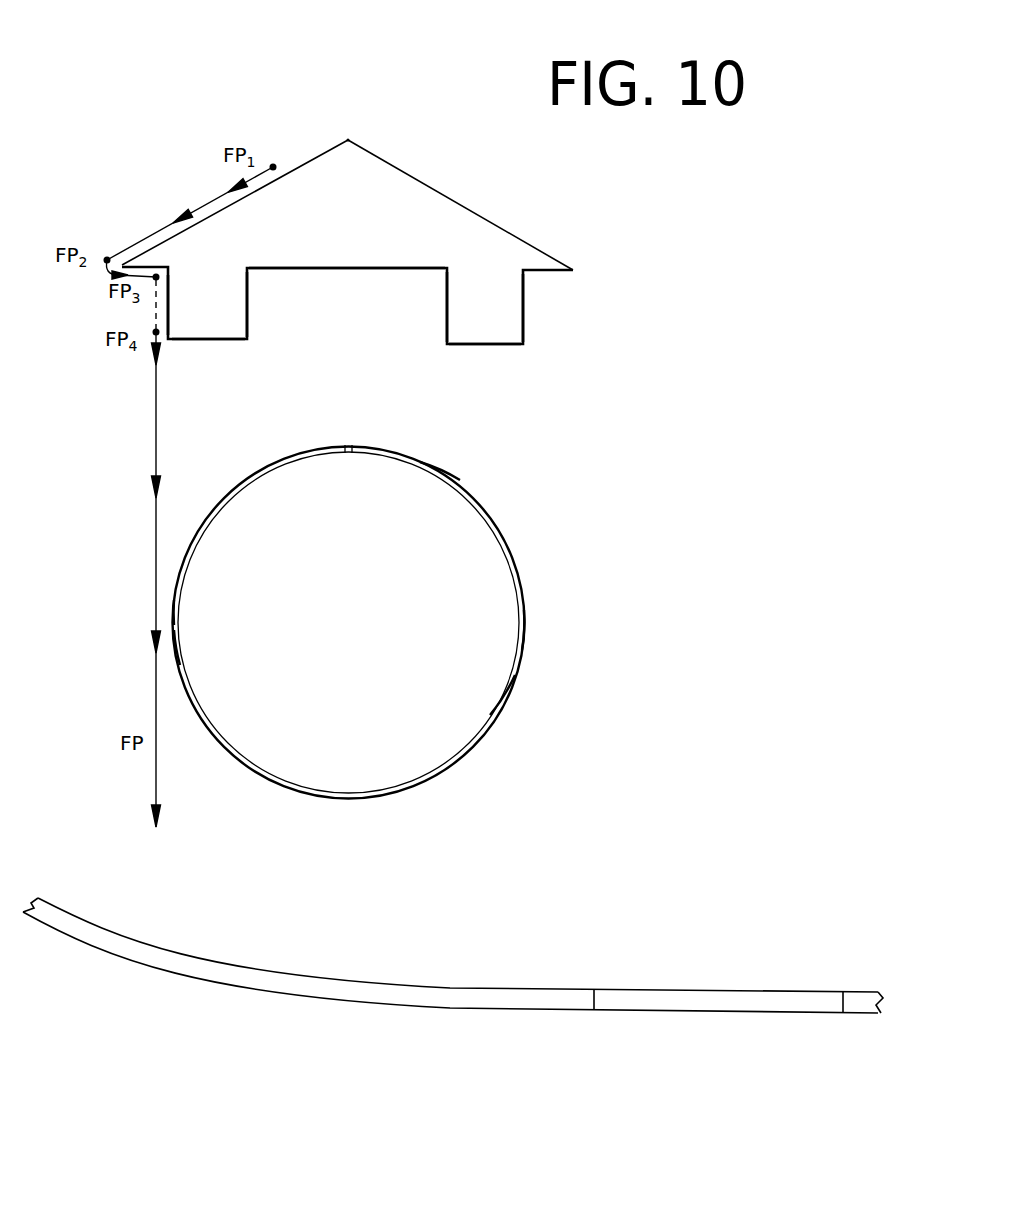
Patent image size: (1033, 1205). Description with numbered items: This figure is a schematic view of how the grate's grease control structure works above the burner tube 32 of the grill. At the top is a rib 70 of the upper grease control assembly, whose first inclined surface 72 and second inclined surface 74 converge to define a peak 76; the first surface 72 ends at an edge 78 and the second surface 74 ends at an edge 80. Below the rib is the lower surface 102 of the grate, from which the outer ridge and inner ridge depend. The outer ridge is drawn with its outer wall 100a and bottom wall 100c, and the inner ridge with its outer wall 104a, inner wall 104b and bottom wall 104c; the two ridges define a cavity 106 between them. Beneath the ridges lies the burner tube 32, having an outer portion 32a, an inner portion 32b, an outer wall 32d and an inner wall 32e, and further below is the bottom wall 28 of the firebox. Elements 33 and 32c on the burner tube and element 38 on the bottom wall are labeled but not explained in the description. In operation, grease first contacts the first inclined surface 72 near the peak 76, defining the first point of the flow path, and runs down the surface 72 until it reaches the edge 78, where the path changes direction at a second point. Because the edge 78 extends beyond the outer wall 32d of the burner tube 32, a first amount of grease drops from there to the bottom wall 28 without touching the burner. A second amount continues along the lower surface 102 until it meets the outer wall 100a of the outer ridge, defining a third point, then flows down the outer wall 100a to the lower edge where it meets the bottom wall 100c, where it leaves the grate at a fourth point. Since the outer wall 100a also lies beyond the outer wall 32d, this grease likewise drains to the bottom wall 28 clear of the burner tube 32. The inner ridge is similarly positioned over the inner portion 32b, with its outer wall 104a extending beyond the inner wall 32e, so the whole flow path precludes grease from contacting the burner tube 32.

The rib 70 is at (382, 174).
The first inclined surface 72 is at (307, 160).
The second inclined surface 74 is at (467, 205).
The peak 76 is at (348, 140).
The edge 78 is at (125, 264).
The edge 80 is at (573, 270).
The lower surface 102 is at (374, 337).
The outer wall 100a is at (170, 288).
The bottom wall 100c is at (217, 342).
The outer wall 104a is at (527, 320).
The inner wall 104b is at (248, 302).
The bottom wall 104c is at (492, 345).
The cavity 106 is at (340, 268).
The burner tube 32 is at (385, 600).
The ring seam 33 is at (348, 445).
The outer portion 32a is at (177, 613).
The inner portion 32b is at (495, 637).
The ring upper segment 32c is at (415, 487).
The outer wall 32d is at (178, 639).
The inner wall 32e is at (503, 703).
The bottom wall 28 is at (453, 965).
The plate section 38 is at (637, 997).